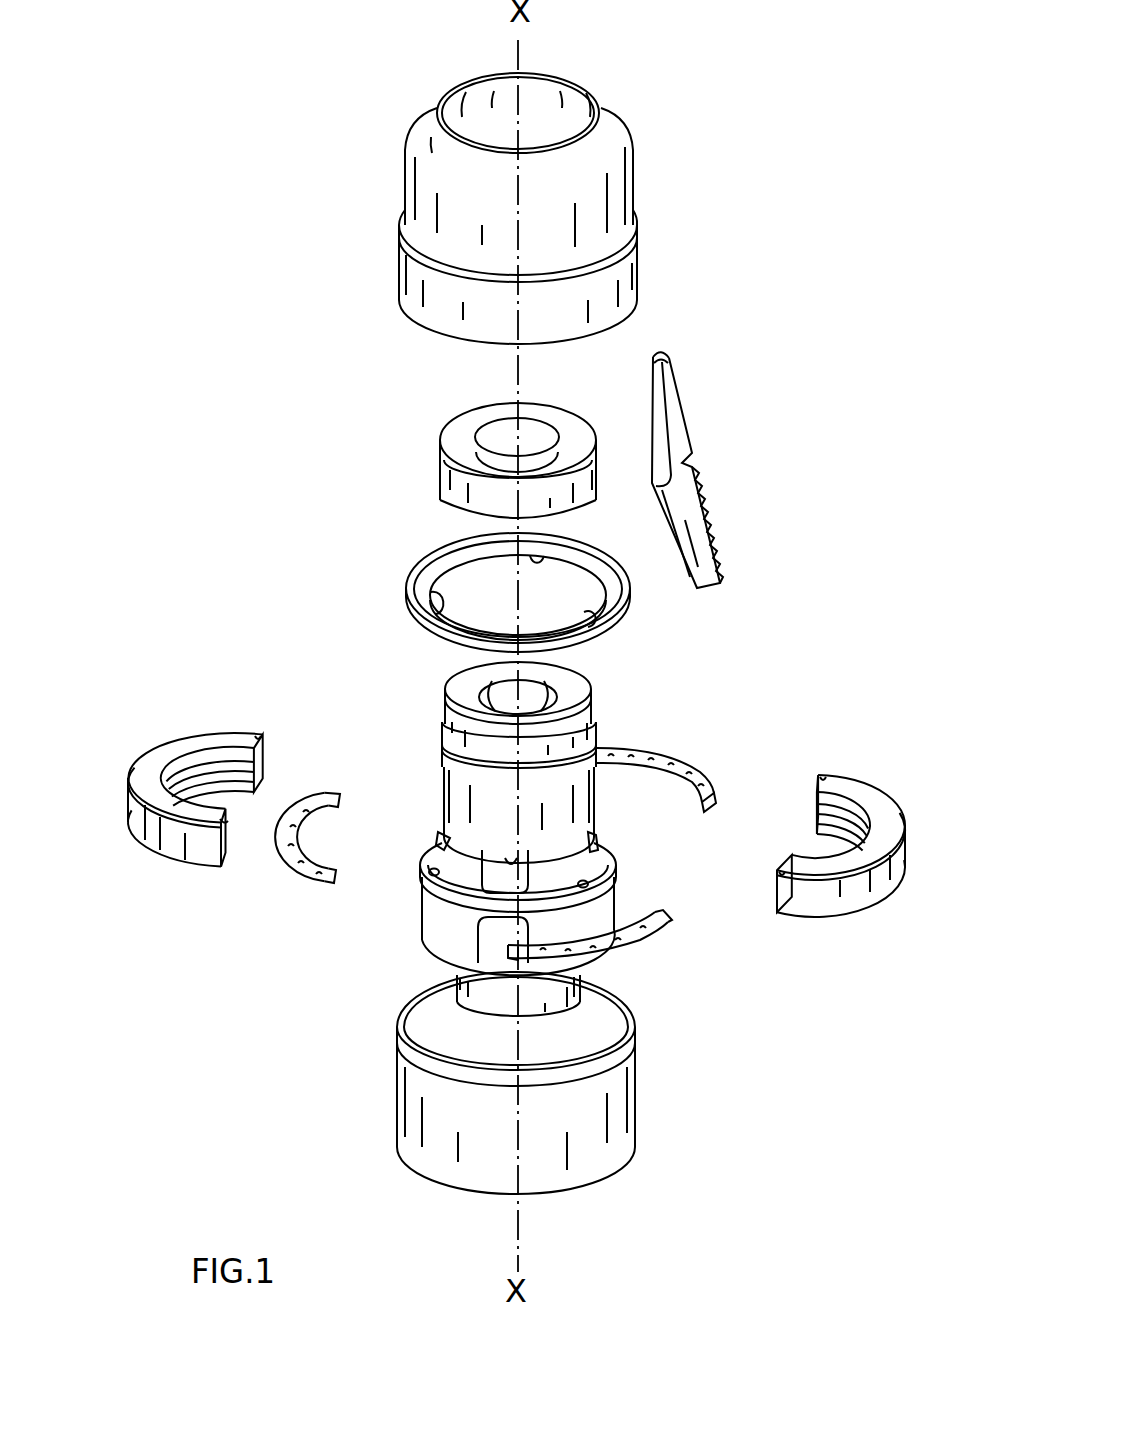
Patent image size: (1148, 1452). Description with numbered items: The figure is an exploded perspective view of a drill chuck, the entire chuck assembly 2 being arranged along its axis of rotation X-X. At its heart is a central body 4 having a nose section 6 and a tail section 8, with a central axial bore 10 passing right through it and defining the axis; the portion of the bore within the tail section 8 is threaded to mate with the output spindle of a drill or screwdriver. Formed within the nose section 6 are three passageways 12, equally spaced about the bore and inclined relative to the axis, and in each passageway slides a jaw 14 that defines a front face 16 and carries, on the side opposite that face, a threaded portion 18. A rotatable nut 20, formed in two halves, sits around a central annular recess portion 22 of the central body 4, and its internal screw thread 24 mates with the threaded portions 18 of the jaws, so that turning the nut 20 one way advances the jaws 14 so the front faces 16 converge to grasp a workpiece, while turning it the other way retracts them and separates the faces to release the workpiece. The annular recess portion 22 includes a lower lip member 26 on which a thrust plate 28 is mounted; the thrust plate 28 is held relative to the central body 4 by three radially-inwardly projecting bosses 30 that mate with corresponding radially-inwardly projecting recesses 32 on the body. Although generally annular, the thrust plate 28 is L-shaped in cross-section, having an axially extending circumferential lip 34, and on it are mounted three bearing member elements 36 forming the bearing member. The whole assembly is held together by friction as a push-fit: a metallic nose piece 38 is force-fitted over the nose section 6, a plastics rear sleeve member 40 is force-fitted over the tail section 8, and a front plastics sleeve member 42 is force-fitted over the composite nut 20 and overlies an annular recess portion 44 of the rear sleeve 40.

The chuck assembly 2 is at (258, 513).
The central body 4 is at (435, 933).
The nose section 6 is at (447, 702).
The tail section 8 is at (572, 987).
The central axial bore 10 is at (535, 690).
The passageways 12 is at (488, 690).
The jaw 14 is at (683, 493).
The front face 16 is at (655, 382).
The threaded portion 18 is at (722, 553).
The rotatable nut 20 is at (165, 838).
The annular recess portion 22 is at (470, 863).
The internal screw thread 24 is at (232, 782).
The lower lip member 26 is at (616, 872).
The thrust plate 28 is at (432, 573).
The radially-inwardly projecting bosses 30 is at (432, 596).
The radially-inwardly projecting recesses 32 is at (435, 874).
The axially extending circumferential lip 34 is at (448, 543).
The bearing member elements 36 is at (678, 760).
The metallic nose piece 38 is at (470, 420).
The rear sleeve member 40 is at (595, 1140).
The front sleeve member 42 is at (428, 152).
The annular recess portion 44 is at (613, 1050).